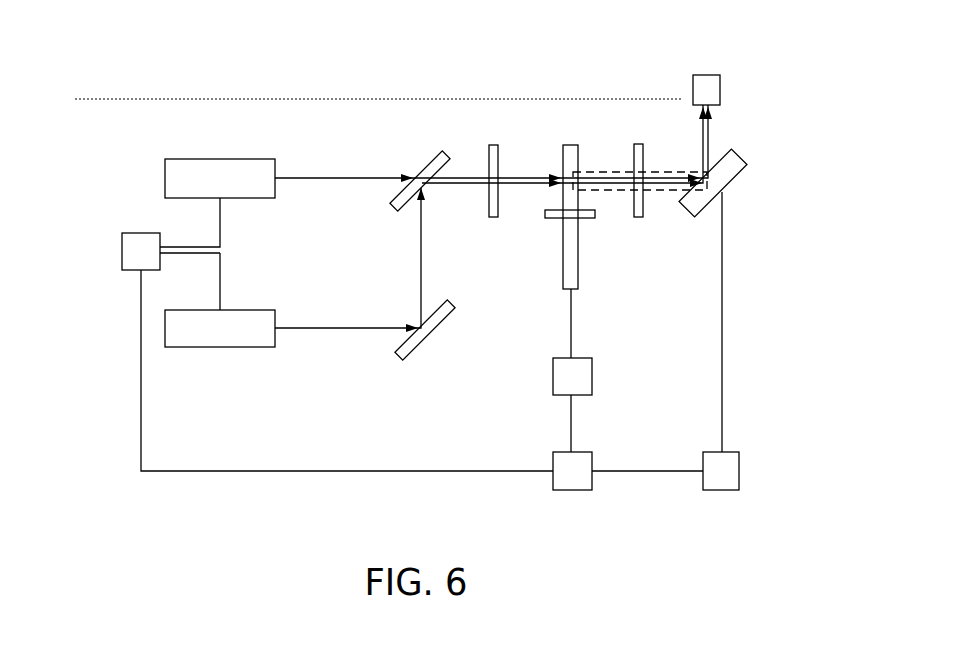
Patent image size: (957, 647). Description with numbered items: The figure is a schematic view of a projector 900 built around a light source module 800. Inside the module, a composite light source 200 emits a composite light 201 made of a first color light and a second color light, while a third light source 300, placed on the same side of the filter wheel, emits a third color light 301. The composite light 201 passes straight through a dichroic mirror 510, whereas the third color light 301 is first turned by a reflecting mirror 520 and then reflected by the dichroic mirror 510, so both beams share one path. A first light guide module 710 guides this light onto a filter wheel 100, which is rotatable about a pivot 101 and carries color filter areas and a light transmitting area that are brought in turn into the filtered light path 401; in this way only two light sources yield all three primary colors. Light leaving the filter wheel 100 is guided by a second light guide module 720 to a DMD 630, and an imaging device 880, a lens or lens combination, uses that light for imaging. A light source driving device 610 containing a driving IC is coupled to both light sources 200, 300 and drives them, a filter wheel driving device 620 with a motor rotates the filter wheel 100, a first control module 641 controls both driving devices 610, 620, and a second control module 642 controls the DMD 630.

The projector 900 is at (78, 31).
The light source module 800 is at (379, 85).
The composite light source 200 is at (205, 170).
The third light source 300 is at (177, 328).
The light source driving device 610 is at (137, 240).
The composite light 201 is at (493, 143).
The third color light 301 is at (491, 218).
The dichroic mirror 510 is at (422, 165).
The reflecting mirror 520 is at (438, 310).
The DMD 630 is at (725, 172).
The first light guide module 710 is at (489, 158).
The filter wheel 100 is at (570, 160).
The pivot 101 is at (548, 214).
The second light guide module 720 is at (638, 162).
The filtered light path 401 is at (672, 190).
The filter wheel driving device 620 is at (578, 372).
The first control module 641 is at (578, 463).
The second control module 642 is at (728, 470).
The imaging device 880 is at (710, 82).